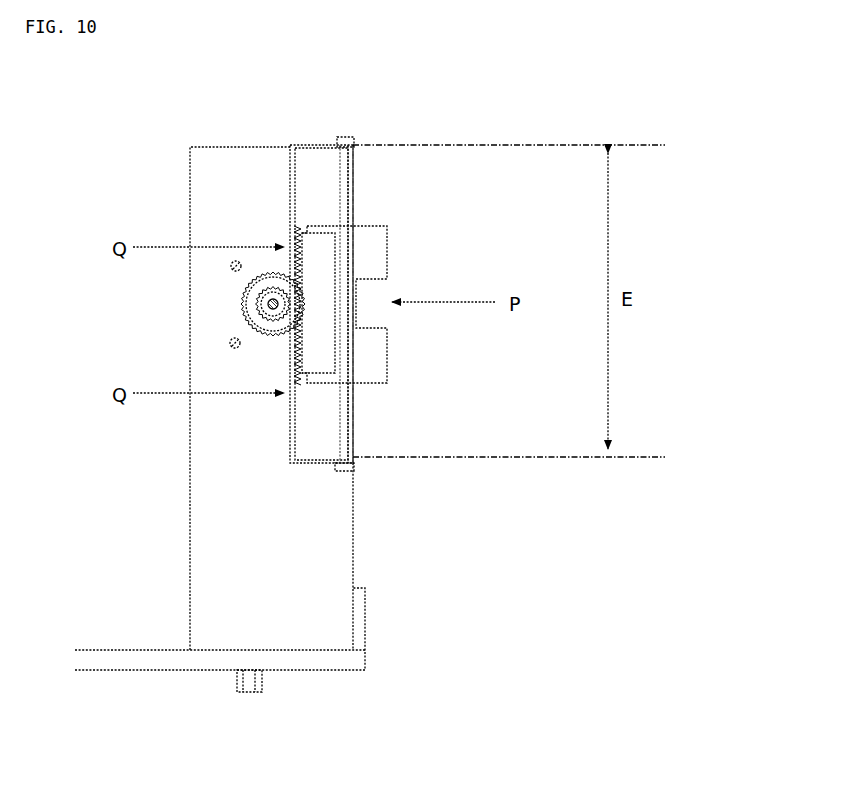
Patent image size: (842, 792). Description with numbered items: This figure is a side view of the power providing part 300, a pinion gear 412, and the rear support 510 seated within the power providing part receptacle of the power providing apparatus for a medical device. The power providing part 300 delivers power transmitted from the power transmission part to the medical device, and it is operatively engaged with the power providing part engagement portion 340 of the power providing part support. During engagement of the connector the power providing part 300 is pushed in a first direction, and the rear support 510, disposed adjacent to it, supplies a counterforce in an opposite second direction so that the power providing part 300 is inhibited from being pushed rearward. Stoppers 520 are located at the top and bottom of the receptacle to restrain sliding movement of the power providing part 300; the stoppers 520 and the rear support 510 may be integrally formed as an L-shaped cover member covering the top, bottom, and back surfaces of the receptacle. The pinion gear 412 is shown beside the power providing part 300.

The power providing part 300 is at (387, 356).
The power providing part engagement portion 340 is at (343, 183).
The drive gear 412 is at (252, 305).
The rear support 510 is at (290, 198).
The stoppers 520 is at (329, 144).